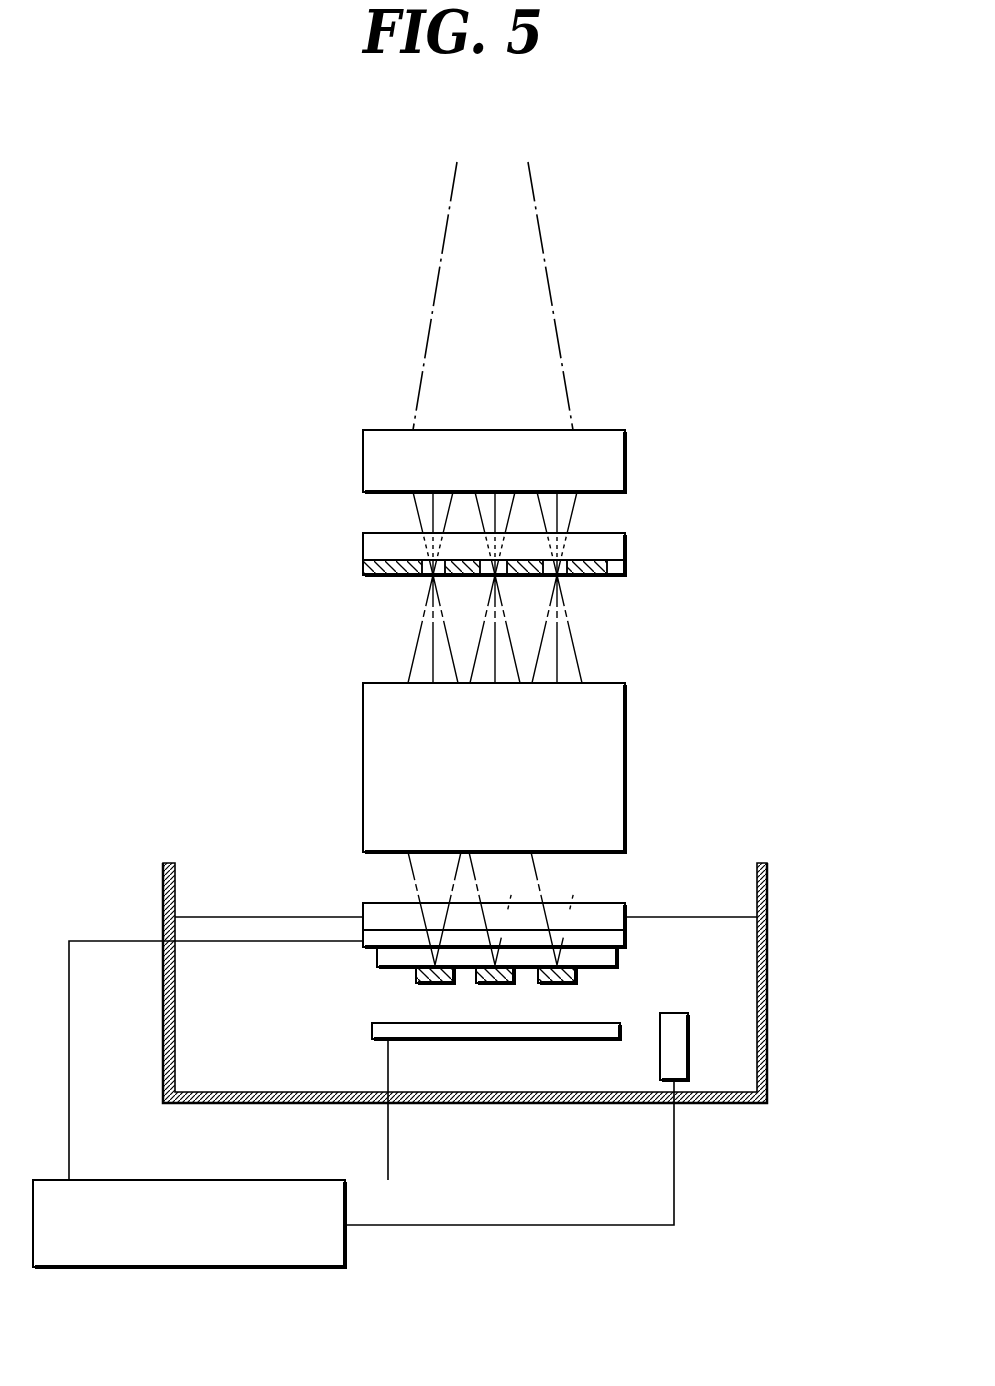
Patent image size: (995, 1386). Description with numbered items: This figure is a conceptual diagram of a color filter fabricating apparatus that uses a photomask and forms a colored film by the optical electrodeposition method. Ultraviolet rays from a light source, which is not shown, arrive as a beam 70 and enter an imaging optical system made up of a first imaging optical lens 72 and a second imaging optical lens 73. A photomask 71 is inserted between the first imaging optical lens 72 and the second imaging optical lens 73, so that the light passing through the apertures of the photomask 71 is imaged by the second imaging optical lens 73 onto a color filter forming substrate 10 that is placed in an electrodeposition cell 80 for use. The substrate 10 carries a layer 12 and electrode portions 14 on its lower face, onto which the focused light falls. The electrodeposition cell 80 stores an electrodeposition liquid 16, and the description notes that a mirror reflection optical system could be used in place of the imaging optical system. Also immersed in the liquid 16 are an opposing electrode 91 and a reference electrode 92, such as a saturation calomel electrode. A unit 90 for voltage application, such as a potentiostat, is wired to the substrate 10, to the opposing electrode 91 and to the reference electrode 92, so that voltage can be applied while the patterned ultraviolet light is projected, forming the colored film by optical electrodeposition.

The exposure light beam 70 is at (560, 340).
The first imaging optical lens 72 is at (628, 458).
The photomask 71 is at (628, 548).
The second imaging optical lens 73 is at (628, 712).
The substrate 10 is at (600, 910).
The transparent conductive layer 12 is at (617, 938).
The electrode pattern 14 is at (617, 960).
The electrodeposition cell 80 is at (767, 893).
The electrolyte solution 16 is at (740, 1061).
The opposing electrode 91 is at (543, 1041).
The reference electrode 92 is at (674, 1125).
The unit for voltage application 90 is at (253, 1180).